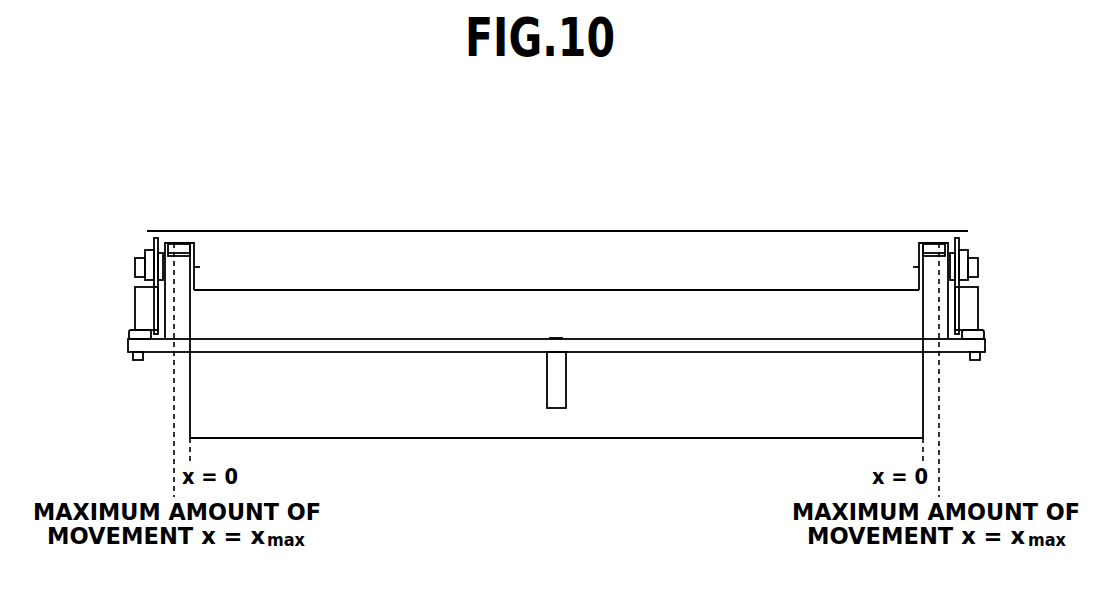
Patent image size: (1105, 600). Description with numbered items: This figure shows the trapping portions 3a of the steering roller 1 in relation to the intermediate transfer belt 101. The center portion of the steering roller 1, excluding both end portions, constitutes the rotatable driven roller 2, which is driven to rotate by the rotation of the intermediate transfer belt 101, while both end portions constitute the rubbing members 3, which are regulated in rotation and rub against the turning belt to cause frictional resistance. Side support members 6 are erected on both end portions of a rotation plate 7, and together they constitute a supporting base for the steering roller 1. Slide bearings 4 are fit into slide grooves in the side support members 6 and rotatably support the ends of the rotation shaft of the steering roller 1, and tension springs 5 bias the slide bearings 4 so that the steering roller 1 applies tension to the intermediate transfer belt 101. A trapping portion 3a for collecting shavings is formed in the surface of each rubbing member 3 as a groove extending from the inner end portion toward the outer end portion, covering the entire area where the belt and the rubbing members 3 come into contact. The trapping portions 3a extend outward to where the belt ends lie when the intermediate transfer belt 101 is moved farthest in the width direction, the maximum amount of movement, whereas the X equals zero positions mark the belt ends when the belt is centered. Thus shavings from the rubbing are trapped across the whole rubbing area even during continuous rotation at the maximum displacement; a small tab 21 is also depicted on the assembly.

The steering roller 1 is at (512, 201).
The driven roller 2 is at (618, 246).
The rubbing member 3 is at (174, 245).
The trapping portion 3a is at (188, 253).
The slide bearing 4 is at (155, 246).
The tension spring 5 is at (135, 303).
The side support member 6 is at (152, 340).
The rotation plate 7 is at (945, 349).
The tab 21 is at (556, 402).
The intermediate transfer belt 101 is at (423, 423).